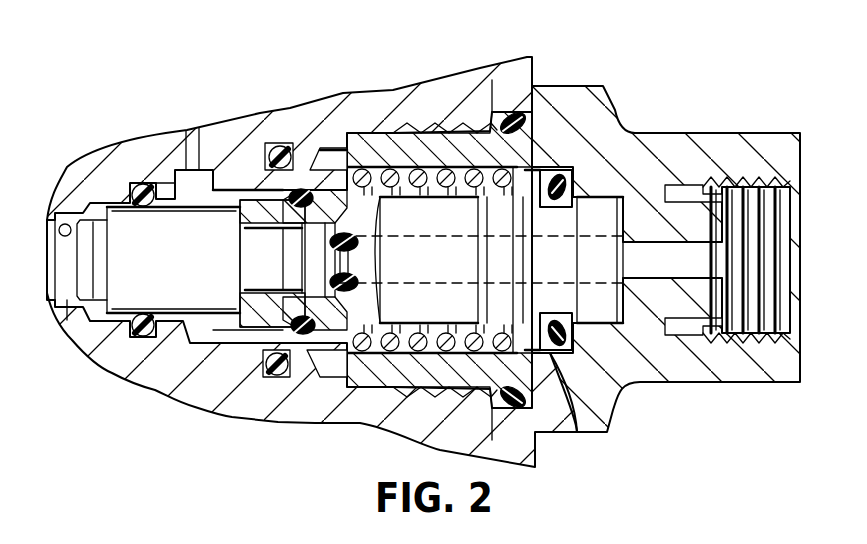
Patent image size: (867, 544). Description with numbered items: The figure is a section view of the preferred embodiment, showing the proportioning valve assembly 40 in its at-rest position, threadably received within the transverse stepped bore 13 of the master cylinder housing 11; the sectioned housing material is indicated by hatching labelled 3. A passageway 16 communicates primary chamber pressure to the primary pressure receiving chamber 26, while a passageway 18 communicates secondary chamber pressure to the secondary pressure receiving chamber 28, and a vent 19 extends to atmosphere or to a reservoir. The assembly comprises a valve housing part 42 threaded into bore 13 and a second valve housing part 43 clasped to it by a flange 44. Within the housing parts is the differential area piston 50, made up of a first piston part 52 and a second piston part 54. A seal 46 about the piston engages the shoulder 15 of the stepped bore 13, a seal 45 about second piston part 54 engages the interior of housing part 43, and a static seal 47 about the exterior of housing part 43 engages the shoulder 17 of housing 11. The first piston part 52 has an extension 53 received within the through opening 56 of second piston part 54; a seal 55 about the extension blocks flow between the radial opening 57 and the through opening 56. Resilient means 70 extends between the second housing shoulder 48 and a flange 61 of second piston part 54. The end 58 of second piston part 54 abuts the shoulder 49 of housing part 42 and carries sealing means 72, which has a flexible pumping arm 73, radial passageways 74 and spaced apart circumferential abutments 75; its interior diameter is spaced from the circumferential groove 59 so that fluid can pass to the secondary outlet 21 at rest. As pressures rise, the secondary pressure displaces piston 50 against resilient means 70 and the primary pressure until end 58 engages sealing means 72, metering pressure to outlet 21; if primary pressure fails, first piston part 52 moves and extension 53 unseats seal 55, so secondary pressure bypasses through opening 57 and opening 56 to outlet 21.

The passage 3 is at (407, 290).
The master cylinder housing 11 is at (97, 157).
The transverse bore 13 is at (236, 168).
The shoulder 15 is at (118, 183).
The passageway 16 is at (63, 222).
The shoulder 17 is at (262, 378).
The passageway 18 is at (387, 140).
The vent 19 is at (191, 133).
The secondary outlet 21 is at (782, 230).
The primary pressure receiving chamber 26 is at (67, 321).
The secondary pressure receiving chamber 28 is at (330, 140).
The proportioning valve assembly 40 is at (596, 74).
The valve housing part 42 is at (616, 130).
The valve housing part 43 is at (210, 345).
The flange 44 is at (290, 143).
The seal 45 is at (240, 335).
The seal 46 is at (139, 184).
The seal 47 is at (283, 377).
The second housing shoulder 48 is at (352, 148).
The shoulder 49 is at (623, 238).
The differential area piston 50 is at (157, 266).
The first piston part 52 is at (175, 313).
The extension 53 is at (252, 274).
The second piston part 54 is at (431, 230).
The seal 55 is at (402, 245).
The through opening 56 is at (497, 252).
The radial opening 57 is at (341, 292).
The end 58 is at (584, 231).
The circumferential groove 59 is at (560, 290).
The flange 61 is at (493, 128).
The resilient means 70 is at (423, 128).
The sealing means 72 is at (612, 128).
The flexible pumping arm 73 is at (539, 168).
The radial passageways 74 is at (573, 172).
The circumferential abutments 75 is at (577, 425).